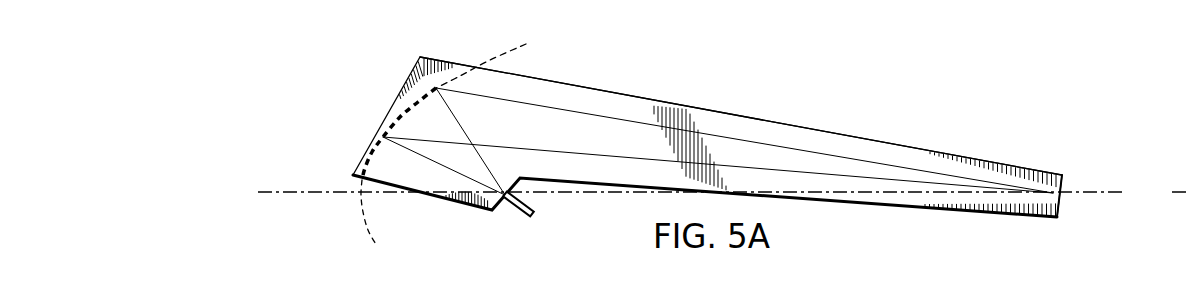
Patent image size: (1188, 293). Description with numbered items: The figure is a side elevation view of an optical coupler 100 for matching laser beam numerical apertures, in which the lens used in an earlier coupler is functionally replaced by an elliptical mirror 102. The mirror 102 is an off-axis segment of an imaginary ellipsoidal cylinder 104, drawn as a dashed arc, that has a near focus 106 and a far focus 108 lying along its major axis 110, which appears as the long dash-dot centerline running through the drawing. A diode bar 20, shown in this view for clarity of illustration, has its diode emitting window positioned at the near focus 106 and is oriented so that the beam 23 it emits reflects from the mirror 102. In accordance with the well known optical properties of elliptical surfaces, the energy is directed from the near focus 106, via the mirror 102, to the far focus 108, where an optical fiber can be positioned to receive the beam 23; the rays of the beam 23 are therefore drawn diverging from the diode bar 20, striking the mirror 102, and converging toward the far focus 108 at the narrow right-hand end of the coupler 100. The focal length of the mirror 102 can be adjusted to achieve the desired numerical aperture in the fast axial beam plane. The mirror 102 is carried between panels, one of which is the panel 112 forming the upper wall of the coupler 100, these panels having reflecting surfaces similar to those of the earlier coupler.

The coupler 100 is at (1040, 120).
The elliptical mirror 102 is at (432, 94).
The imaginary ellipsoidal cylinder 104 is at (366, 228).
The near focus 106 is at (505, 213).
The far focus 108 is at (1063, 198).
The major axis 110 is at (723, 195).
The panel 112 is at (808, 140).
The diode bar 20 is at (533, 216).
The beam 23 is at (490, 160).